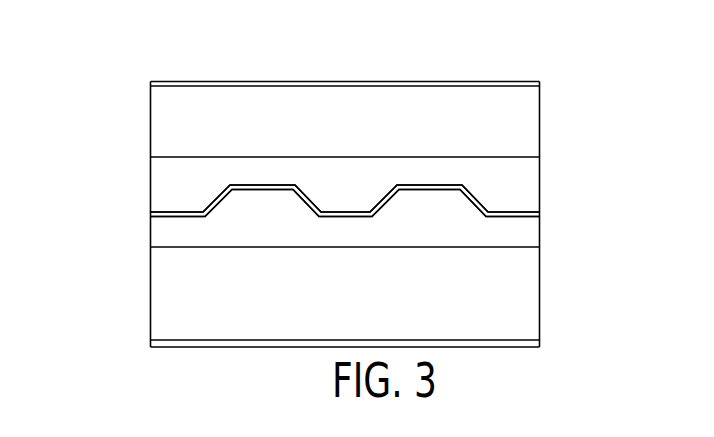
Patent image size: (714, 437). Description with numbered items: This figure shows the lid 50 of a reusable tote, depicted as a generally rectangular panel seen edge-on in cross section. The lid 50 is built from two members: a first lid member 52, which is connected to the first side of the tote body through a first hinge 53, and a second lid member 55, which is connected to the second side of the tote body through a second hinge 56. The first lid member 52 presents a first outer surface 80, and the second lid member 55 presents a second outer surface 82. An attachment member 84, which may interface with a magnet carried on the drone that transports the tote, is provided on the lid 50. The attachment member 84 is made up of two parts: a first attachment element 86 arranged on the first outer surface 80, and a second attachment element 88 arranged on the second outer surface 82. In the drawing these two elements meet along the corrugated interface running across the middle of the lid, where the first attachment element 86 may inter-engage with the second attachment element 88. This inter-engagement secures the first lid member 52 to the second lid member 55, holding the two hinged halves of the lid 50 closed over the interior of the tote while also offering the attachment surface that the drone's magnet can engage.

The lid 50 is at (104, 126).
The first lid member 52 is at (444, 106).
The first hinge 53 is at (533, 83).
The first outer surface 80 is at (182, 107).
The attachment member 84 is at (558, 192).
The first attachment element 86 is at (522, 175).
The second attachment element 88 is at (455, 227).
The second outer surface 82 is at (182, 289).
The second lid member 55 is at (498, 312).
The second hinge 56 is at (542, 342).